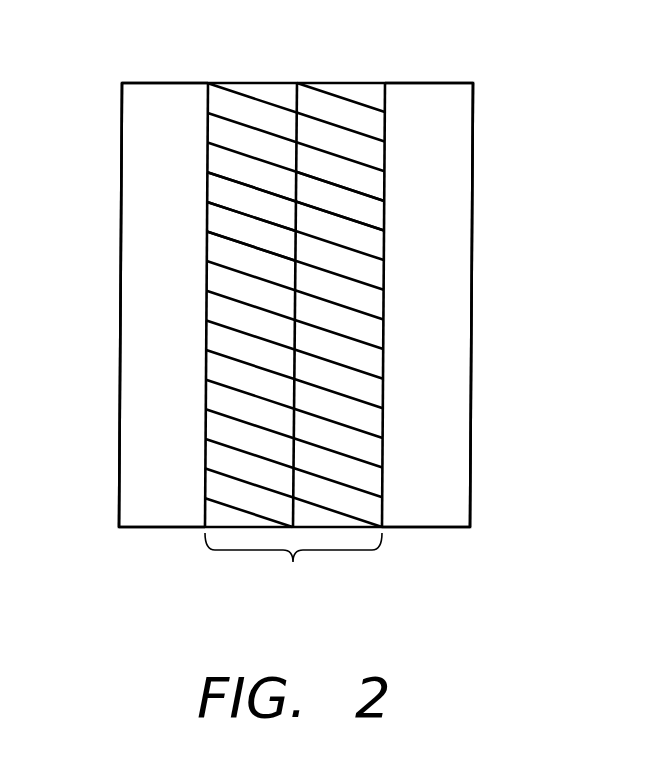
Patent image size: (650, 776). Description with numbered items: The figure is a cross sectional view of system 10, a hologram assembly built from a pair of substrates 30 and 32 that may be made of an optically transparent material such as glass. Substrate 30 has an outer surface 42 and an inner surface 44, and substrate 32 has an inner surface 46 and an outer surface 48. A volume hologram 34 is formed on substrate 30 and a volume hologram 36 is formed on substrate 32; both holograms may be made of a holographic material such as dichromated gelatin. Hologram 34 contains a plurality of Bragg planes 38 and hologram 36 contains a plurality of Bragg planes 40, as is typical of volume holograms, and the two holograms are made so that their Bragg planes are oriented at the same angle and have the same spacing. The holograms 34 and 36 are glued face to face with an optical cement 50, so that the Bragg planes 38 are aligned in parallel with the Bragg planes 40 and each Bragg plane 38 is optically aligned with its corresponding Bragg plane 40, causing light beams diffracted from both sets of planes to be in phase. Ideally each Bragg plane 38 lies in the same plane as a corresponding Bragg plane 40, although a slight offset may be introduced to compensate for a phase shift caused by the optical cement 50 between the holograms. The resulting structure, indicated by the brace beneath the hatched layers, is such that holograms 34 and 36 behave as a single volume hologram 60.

The system 10 is at (78, 583).
The substrate 30 is at (157, 86).
The substrate 32 is at (443, 88).
The volume hologram 34 is at (262, 87).
The volume hologram 36 is at (348, 84).
The Bragg planes 38 is at (221, 234).
The Bragg planes 40 is at (363, 224).
The outer surface 42 is at (118, 380).
The inner surface 44 is at (206, 340).
The inner surface 46 is at (384, 365).
The outer surface 48 is at (471, 398).
The optical cement 50 is at (297, 83).
The single volume hologram 60 is at (293, 569).